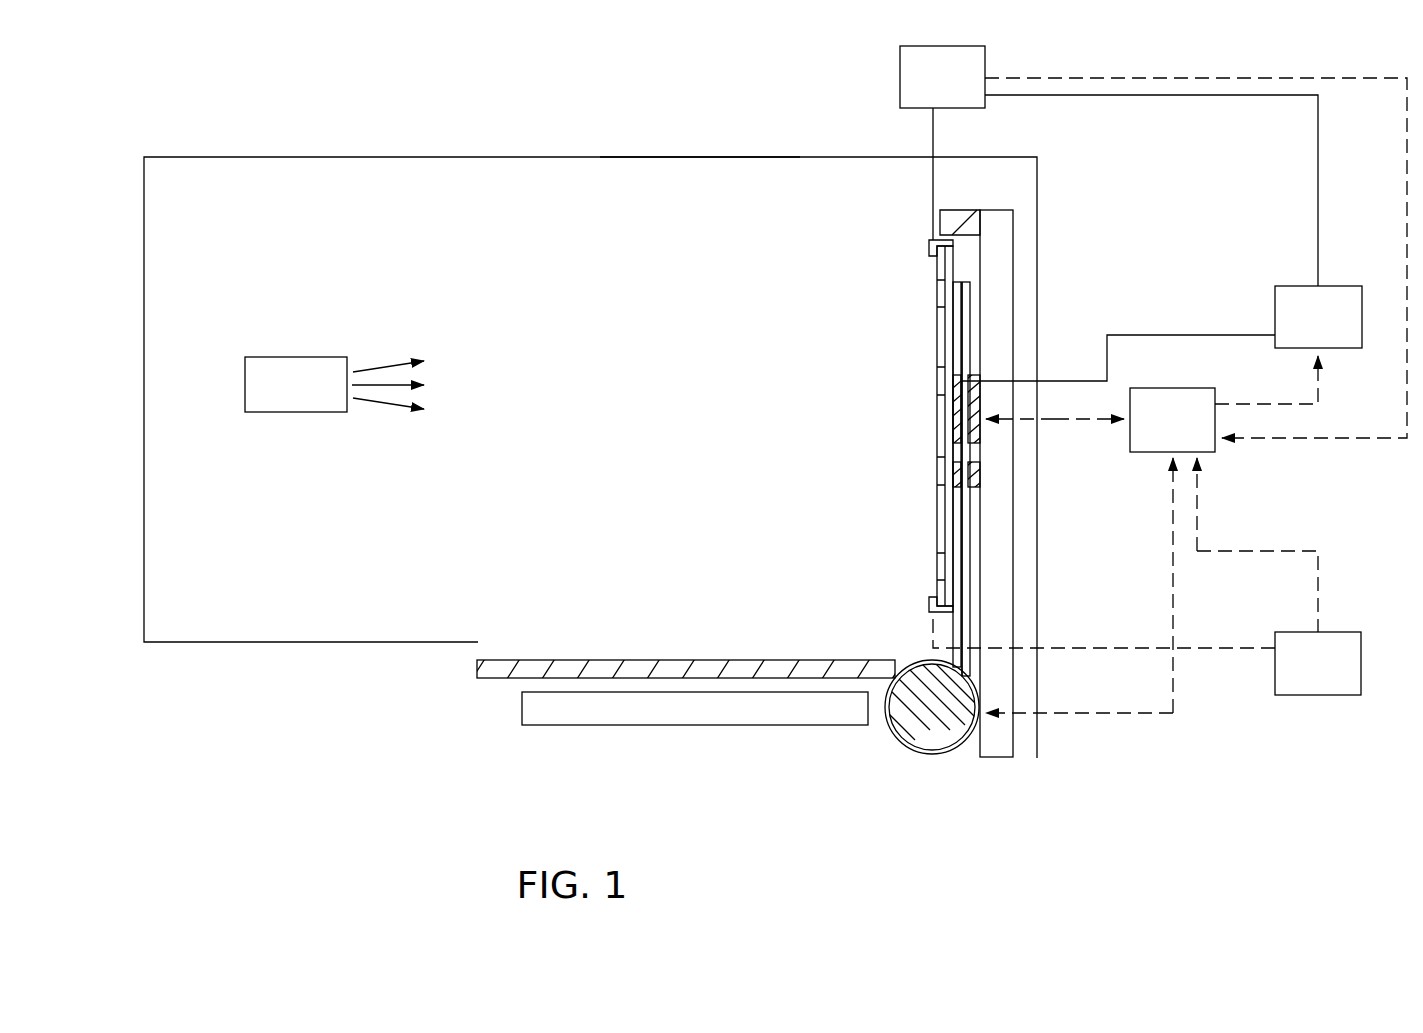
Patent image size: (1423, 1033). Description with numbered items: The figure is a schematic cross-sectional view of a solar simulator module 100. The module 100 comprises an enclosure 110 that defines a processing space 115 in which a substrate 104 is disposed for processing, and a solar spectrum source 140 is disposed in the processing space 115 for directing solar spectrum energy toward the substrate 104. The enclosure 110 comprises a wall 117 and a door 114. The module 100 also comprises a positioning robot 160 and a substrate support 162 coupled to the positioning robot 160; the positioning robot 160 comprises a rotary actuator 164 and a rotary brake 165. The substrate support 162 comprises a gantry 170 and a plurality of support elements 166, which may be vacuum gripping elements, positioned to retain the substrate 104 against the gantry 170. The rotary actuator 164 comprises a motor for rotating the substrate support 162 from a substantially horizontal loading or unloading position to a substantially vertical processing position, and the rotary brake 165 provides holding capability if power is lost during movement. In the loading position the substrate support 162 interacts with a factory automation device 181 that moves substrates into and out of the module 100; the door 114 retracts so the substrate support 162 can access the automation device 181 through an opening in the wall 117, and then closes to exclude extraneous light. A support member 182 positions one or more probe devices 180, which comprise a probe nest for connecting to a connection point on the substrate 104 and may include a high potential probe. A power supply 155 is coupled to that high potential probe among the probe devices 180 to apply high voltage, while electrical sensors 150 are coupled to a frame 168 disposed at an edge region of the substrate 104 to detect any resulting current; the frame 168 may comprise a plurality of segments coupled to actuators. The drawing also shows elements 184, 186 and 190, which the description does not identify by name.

The solar simulator module 100 is at (212, 90).
The enclosure 110 is at (340, 140).
The wall 117 is at (697, 157).
The processing space 115 is at (581, 261).
The solar spectrum source 140 is at (318, 398).
The electrical sensors 150 is at (965, 89).
The power supply 155 is at (1340, 330).
The system controller 190 is at (1194, 433).
The frame 168 is at (930, 245).
The substrate 104 is at (937, 333).
The insulator block 184 is at (952, 236).
The gantry 170 is at (970, 296).
The support member 182 is at (1027, 301).
The probe devices 180 is at (966, 372).
The electrode segment 186 is at (980, 470).
The support elements 166 is at (957, 525).
The substrate support 162 is at (970, 576).
The door 114 is at (705, 660).
The factory automation device 181 is at (683, 726).
The rotary brake 165 is at (897, 736).
The rotary actuator 164 is at (953, 752).
The positioning robot 160 is at (913, 768).